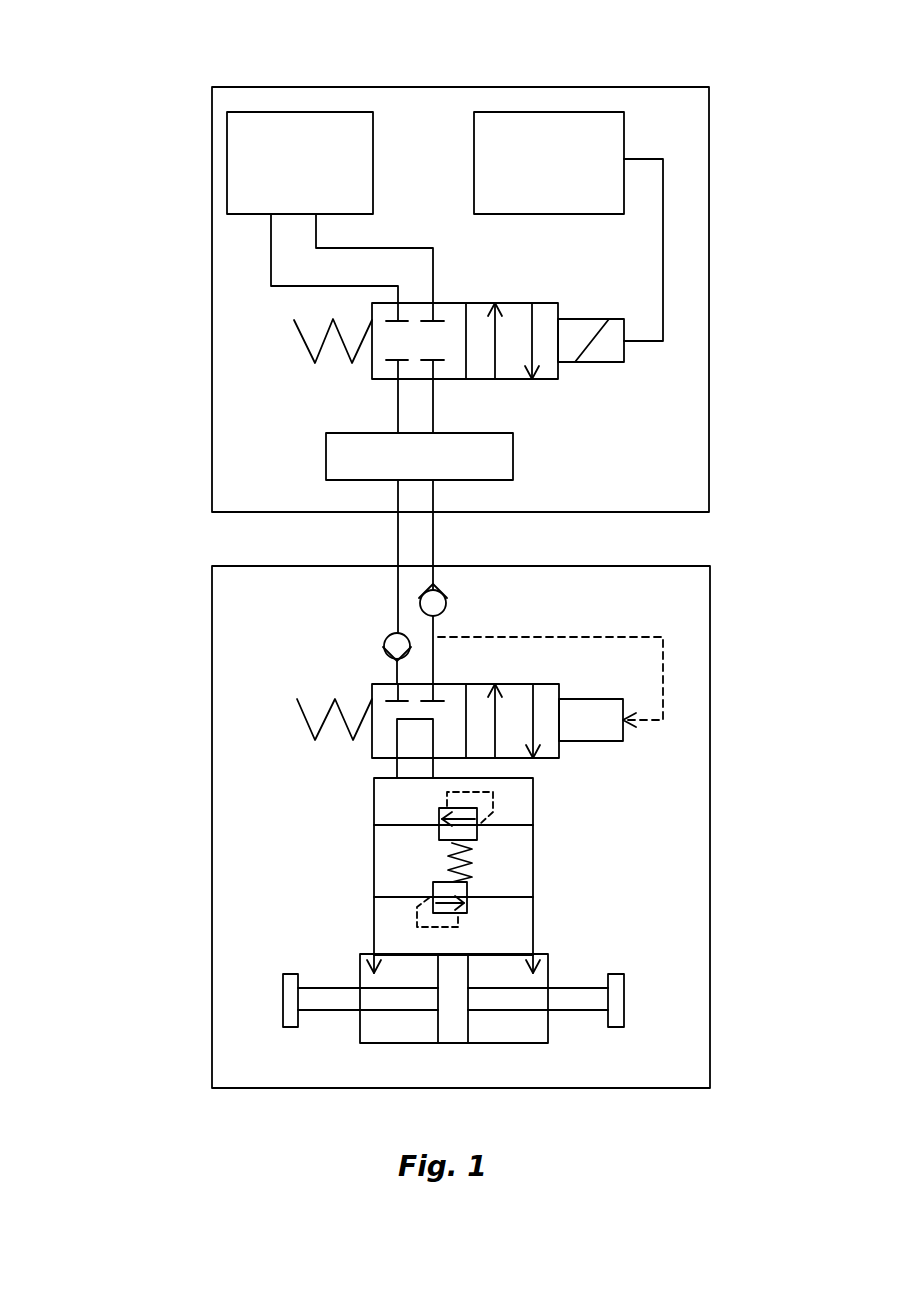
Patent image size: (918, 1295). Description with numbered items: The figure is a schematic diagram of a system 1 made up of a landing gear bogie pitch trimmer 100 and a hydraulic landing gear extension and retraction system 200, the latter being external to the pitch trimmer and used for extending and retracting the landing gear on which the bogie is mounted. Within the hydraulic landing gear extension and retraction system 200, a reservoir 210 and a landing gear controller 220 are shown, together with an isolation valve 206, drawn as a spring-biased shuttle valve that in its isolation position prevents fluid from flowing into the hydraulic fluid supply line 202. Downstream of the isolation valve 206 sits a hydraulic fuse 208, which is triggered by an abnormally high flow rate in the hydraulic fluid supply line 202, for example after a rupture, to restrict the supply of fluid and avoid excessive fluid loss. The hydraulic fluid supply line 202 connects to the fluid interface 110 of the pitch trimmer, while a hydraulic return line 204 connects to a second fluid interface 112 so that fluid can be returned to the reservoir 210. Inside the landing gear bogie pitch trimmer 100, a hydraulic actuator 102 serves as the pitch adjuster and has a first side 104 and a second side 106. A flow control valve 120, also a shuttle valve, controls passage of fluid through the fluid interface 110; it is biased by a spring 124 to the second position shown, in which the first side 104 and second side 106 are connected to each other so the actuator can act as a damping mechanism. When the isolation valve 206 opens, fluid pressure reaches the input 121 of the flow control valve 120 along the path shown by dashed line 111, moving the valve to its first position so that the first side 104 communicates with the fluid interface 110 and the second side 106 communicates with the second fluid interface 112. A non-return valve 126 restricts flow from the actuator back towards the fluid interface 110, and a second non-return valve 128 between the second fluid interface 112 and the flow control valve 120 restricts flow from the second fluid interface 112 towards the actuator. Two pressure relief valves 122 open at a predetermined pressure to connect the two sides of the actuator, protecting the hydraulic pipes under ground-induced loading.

The system 1 is at (162, 97).
The landing gear bogie pitch trimmer 100 is at (108, 639).
The hydraulic actuator 102 is at (454, 1017).
The first side 104 is at (548, 1027).
The second side 106 is at (360, 1032).
The fluid interface 110 is at (433, 566).
The dashed line 111 is at (663, 697).
The second fluid interface 112 is at (397, 565).
The flow control valve 120 is at (559, 758).
The input 121 is at (623, 741).
The pressure relief valves 122 is at (467, 888).
The spring 124 is at (307, 722).
The non-return valve 126 is at (449, 602).
The second non-return valve 128 is at (382, 643).
The hydraulic landing gear extension and retraction system 200 is at (106, 156).
The hydraulic fluid supply line 202 is at (433, 403).
The hydraulic return line 204 is at (398, 403).
The isolation valve 206 is at (558, 307).
The hydraulic fuse 208 is at (392, 469).
The reservoir 210 is at (273, 174).
The landing gear controller 220 is at (522, 174).